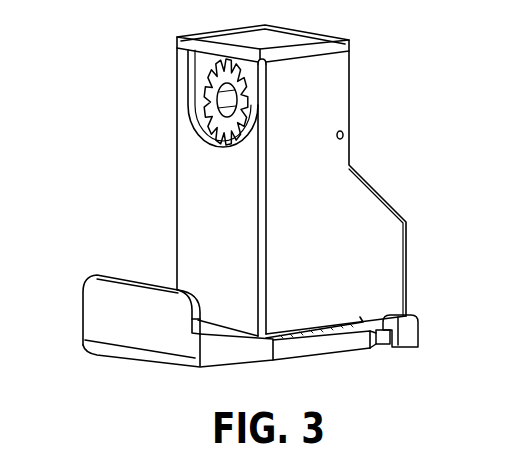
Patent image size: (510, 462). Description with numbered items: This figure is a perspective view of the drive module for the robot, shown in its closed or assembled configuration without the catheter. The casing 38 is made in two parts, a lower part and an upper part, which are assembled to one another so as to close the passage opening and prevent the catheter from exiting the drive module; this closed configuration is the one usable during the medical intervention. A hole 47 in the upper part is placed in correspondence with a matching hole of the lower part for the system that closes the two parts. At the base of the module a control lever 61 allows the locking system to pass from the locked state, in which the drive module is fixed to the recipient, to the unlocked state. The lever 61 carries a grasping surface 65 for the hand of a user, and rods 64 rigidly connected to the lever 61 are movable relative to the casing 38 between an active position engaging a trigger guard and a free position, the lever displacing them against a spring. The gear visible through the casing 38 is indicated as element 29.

The drive gear 29 is at (228, 102).
The casing 38 is at (387, 270).
The hole 47 is at (344, 134).
The control lever 61 is at (165, 347).
The rod 64 is at (387, 345).
The grasping surface 65 is at (120, 295).